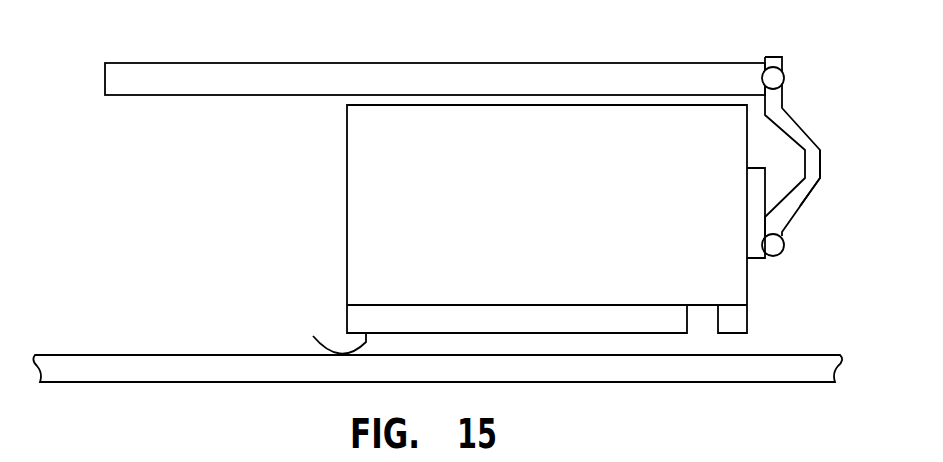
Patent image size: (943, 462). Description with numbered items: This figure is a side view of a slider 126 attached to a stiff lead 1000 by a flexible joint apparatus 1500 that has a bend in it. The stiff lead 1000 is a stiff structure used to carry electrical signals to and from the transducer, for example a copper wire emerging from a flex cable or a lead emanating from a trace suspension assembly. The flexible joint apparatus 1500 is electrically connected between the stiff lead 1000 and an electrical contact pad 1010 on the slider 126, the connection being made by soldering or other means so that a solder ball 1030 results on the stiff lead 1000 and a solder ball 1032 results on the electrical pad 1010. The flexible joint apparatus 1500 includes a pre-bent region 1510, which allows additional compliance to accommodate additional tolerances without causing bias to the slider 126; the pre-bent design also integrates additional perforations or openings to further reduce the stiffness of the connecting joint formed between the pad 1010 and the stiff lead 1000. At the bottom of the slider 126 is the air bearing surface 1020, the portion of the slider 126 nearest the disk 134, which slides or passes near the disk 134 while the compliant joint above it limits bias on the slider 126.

The stiff lead 1000 is at (284, 72).
The flexible joint apparatus 1500 is at (806, 143).
The pre-bent region 1510 is at (819, 176).
The first solder ball 1030 is at (784, 77).
The second solder ball 1032 is at (785, 247).
The electrical contact pad 1010 is at (751, 258).
The slider 126 is at (352, 258).
The air bearing surface 1020 is at (316, 330).
The disk 134 is at (130, 363).